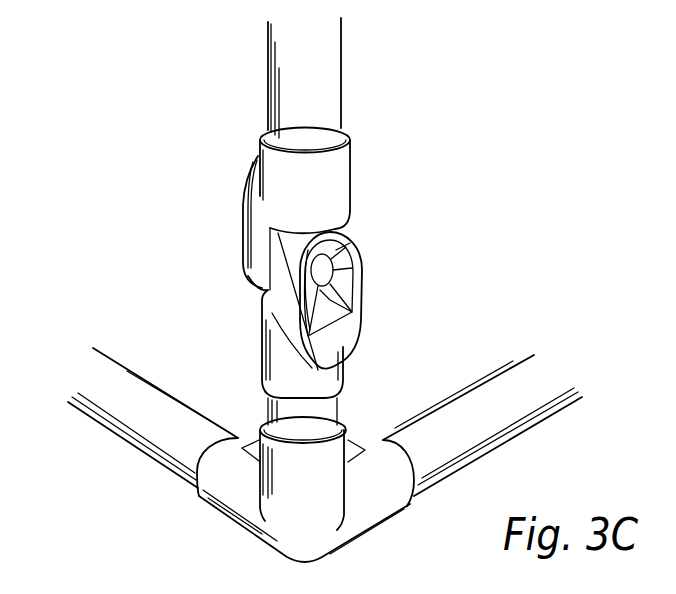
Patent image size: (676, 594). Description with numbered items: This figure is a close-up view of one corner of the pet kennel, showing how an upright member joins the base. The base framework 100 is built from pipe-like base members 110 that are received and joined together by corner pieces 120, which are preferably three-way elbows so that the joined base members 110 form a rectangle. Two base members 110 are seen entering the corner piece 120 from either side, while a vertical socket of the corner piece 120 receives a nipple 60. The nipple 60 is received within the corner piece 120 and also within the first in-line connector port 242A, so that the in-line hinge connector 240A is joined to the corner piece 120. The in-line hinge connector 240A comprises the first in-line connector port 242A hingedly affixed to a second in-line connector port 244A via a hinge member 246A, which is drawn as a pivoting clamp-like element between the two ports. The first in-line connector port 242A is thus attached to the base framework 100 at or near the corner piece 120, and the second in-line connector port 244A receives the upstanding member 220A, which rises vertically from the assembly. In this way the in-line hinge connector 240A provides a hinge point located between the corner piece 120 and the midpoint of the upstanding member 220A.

The base framework 100 is at (132, 508).
The base member 110 is at (110, 410).
The corner piece 120 is at (355, 532).
The nipple 60 is at (322, 410).
The upstanding member 220A is at (327, 67).
The in-line hinge connector 240A is at (193, 207).
The first in-line connector port 242A is at (270, 352).
The second in-line connector port 244A is at (337, 173).
The hinge member 246A is at (362, 280).